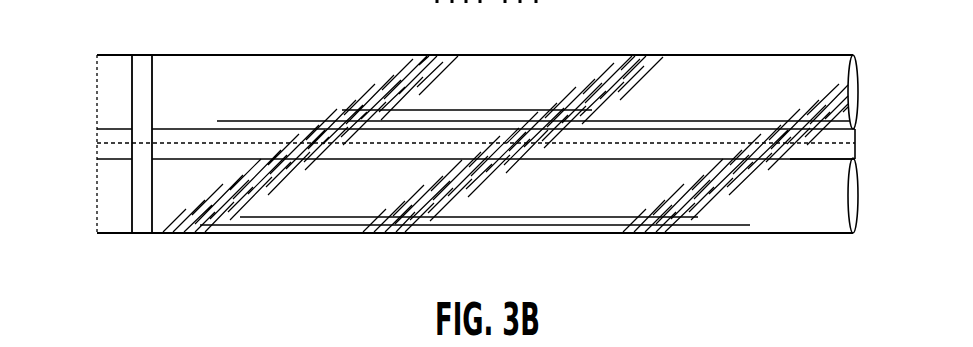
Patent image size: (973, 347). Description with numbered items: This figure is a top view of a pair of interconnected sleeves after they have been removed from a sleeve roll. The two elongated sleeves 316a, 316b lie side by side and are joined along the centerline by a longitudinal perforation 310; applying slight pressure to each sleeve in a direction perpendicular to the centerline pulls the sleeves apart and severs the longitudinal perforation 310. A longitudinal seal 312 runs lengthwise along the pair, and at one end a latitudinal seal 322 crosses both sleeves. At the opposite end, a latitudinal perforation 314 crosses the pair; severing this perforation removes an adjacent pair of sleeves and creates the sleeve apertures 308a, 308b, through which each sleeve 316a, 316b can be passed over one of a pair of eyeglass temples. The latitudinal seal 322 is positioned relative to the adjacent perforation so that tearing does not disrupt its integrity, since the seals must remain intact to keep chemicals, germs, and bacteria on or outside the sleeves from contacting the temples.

The sleeve aperture 308a is at (856, 100).
The sleeve aperture 308b is at (856, 199).
The longitudinal perforation 310 is at (727, 147).
The longitudinal seal 312 is at (800, 158).
The latitudinal perforation 314 is at (858, 120).
The sleeve 316a is at (625, 73).
The sleeve 316b is at (500, 213).
The latitudinal seal 322 is at (144, 66).